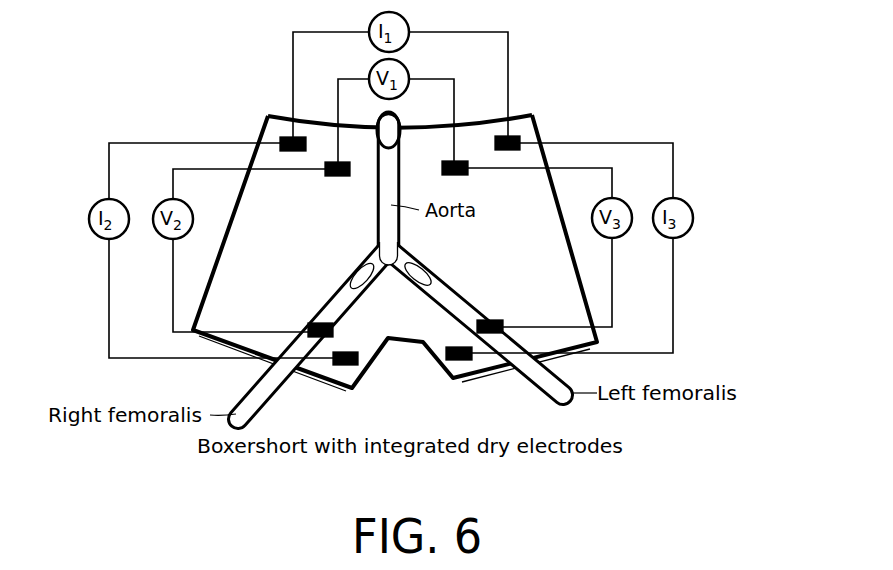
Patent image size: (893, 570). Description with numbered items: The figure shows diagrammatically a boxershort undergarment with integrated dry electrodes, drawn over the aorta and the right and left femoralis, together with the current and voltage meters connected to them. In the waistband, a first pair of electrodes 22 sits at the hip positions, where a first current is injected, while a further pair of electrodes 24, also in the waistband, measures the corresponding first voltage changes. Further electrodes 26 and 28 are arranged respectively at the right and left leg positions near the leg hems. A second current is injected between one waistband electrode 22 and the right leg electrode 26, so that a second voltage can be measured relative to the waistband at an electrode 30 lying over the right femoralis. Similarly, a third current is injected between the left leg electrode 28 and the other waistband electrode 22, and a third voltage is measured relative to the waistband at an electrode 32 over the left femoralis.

The first pair of electrodes 22 is at (285, 137).
The further pair of electrodes 24 is at (330, 161).
The right leg electrode 26 is at (346, 365).
The left leg electrode 28 is at (459, 360).
The electrode 30 is at (312, 325).
The electrode 32 is at (495, 320).